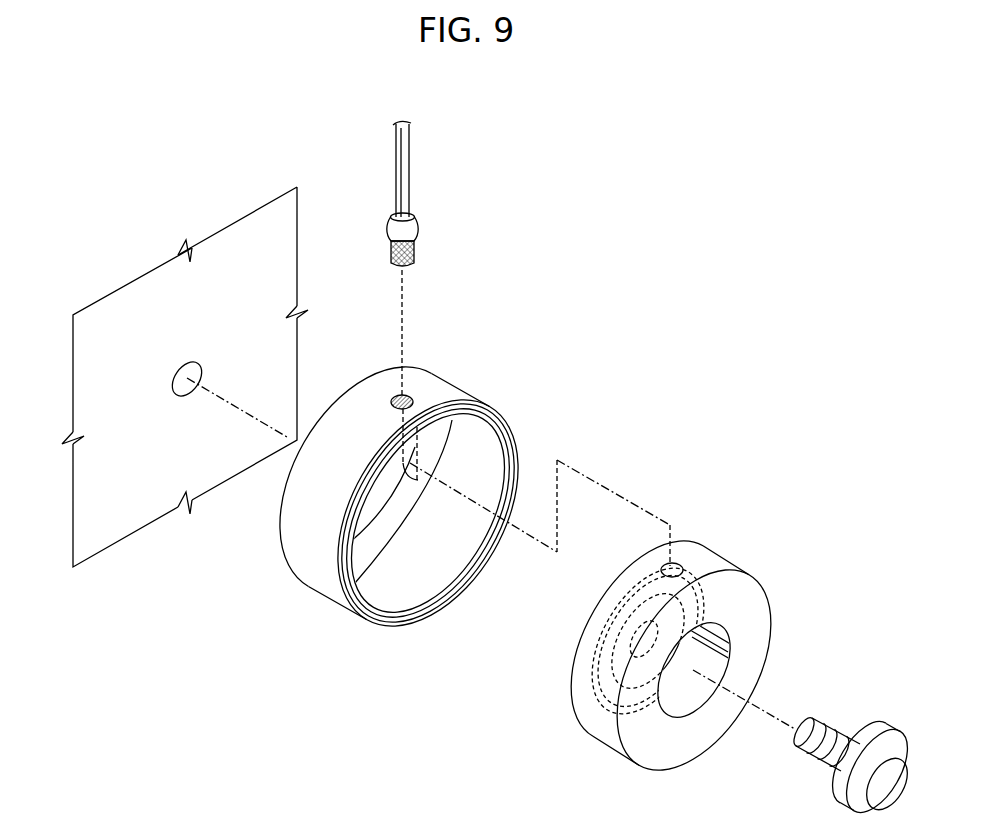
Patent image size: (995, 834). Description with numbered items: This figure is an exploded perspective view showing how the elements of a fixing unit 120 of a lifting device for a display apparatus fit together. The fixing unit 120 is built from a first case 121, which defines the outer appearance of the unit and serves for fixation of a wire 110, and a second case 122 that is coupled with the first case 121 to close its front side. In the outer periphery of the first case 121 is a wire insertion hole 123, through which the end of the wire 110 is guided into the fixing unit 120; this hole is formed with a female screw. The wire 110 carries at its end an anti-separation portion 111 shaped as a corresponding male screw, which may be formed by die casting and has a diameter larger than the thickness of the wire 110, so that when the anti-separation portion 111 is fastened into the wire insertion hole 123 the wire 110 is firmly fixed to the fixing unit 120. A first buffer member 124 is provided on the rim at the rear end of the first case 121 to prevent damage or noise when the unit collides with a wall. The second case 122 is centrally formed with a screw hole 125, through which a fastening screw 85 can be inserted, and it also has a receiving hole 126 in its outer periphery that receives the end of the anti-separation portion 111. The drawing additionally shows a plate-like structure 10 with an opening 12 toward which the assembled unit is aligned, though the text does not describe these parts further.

The structure (mounting panel) 10 is at (74, 285).
The mounting hole 12 is at (193, 362).
The fastening screw 85 is at (865, 743).
The wire 110 is at (407, 173).
The anti-separation portion 111 is at (414, 252).
The fixing unit 120 is at (672, 393).
The first case 121 is at (481, 404).
The second case 122 is at (707, 550).
The wire insertion hole 123 is at (406, 396).
The first buffer member 124 is at (381, 628).
The screw hole 125 is at (633, 641).
The receiving hole 126 is at (662, 570).